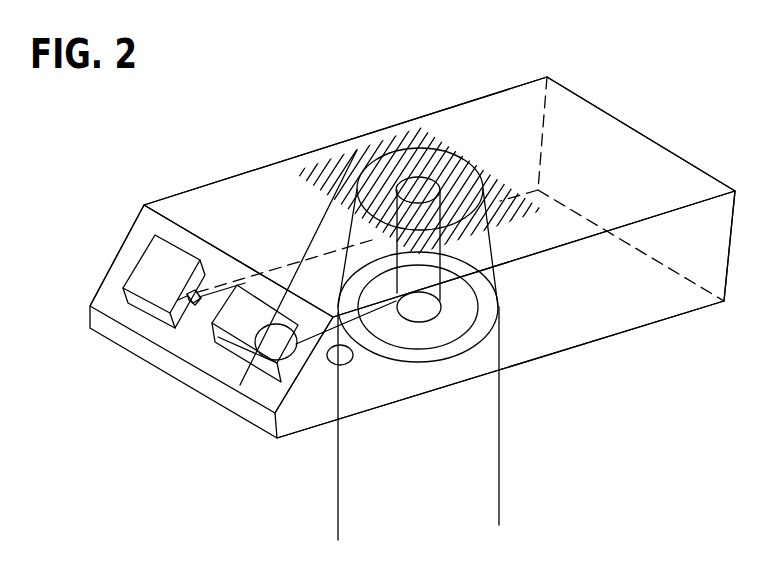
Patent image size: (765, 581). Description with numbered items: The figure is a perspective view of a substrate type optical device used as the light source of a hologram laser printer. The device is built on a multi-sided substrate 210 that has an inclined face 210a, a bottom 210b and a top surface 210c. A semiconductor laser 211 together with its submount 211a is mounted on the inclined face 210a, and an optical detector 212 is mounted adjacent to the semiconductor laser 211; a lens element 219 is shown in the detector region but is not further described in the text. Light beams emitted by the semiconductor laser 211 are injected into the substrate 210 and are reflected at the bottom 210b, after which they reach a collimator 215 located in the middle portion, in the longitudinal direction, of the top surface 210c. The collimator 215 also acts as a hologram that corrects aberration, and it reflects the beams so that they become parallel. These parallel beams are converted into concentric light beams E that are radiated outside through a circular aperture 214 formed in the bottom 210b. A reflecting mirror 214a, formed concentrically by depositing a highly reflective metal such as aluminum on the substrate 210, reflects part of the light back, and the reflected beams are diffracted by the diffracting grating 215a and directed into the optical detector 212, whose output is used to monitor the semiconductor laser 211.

The substrate 210 is at (668, 297).
The inclined face 210a is at (277, 393).
The bottom 210b is at (393, 418).
The top surface 210c is at (605, 130).
The semiconductor laser 211 is at (196, 303).
The submount 211a is at (138, 268).
The optical detector 212 is at (253, 358).
The lens 219 is at (272, 333).
The circular aperture 214 is at (475, 350).
The reflecting mirror 214a is at (445, 316).
The collimator 215 is at (380, 150).
The diffracting grating 215a is at (425, 180).
The concentric light beams E is at (480, 497).